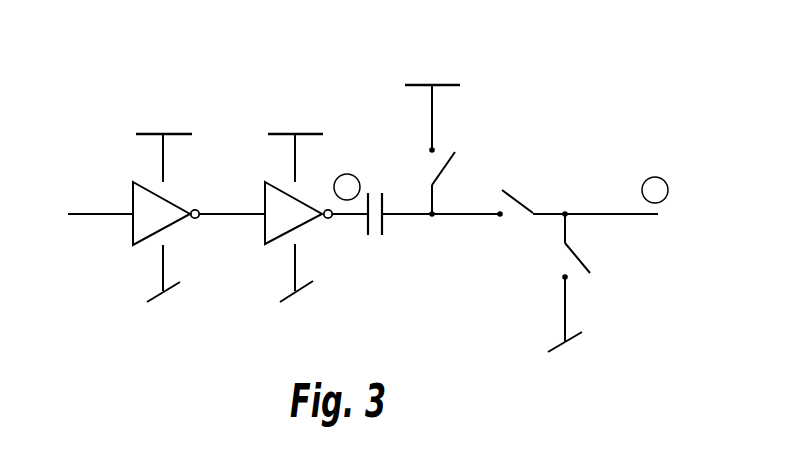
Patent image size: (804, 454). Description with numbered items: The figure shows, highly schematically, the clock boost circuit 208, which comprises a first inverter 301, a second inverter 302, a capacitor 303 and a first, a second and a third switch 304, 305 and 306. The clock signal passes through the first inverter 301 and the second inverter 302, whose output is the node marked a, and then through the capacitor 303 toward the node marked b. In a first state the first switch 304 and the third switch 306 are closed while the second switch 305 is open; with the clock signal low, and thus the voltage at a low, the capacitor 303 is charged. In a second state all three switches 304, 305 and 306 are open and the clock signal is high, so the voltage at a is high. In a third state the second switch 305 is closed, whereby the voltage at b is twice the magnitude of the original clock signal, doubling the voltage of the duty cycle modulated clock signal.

The clock boost circuit 208 is at (130, 73).
The first inverter 301 is at (132, 182).
The second inverter 302 is at (305, 223).
The capacitor 303 is at (383, 225).
The first switch 304 is at (450, 164).
The second switch 305 is at (517, 198).
The third switch 306 is at (585, 262).